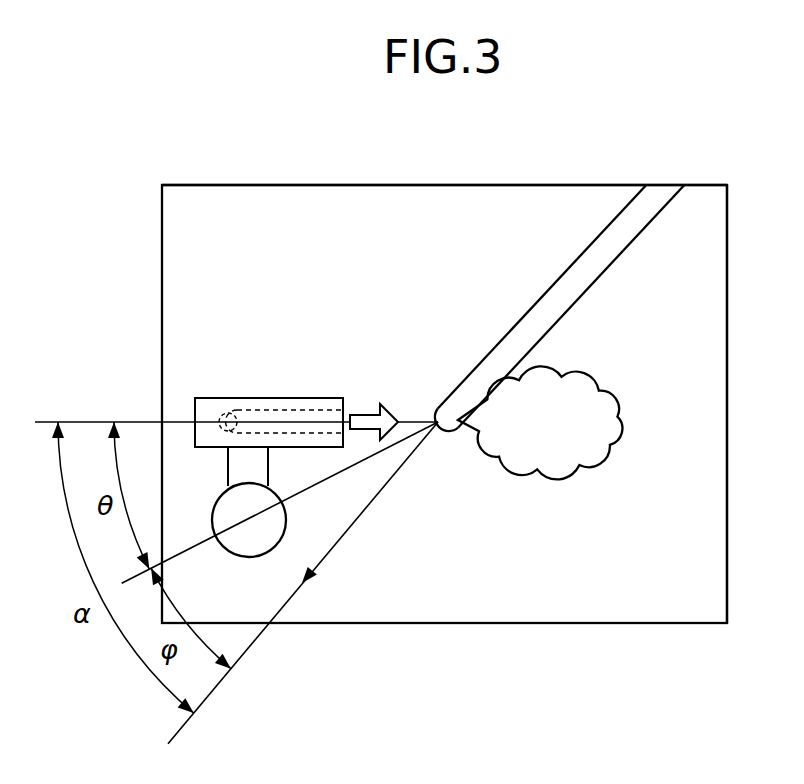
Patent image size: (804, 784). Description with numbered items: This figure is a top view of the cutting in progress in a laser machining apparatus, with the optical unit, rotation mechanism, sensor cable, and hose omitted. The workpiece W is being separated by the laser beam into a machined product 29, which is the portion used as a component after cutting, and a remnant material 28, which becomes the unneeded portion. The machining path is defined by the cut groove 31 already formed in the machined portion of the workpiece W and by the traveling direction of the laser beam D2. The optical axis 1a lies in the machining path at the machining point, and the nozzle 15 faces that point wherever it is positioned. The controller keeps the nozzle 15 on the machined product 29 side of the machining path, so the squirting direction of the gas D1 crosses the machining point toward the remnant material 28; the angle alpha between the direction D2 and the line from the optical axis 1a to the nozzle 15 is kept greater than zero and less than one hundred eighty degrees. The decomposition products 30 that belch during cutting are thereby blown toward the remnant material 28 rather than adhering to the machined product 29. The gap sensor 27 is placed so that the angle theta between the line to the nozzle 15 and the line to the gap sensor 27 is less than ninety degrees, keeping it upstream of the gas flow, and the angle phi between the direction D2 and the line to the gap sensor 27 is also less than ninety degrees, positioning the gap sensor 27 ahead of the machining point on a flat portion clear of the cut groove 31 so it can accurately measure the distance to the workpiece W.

The workpiece W is at (412, 185).
The machined product 29 is at (548, 191).
The remnant material 28 is at (710, 337).
The cut groove 31 is at (664, 191).
The optical axis 1a is at (440, 423).
The nozzle 15 is at (304, 408).
The gap sensor 27 is at (287, 523).
The squirting direction of the gas D1 is at (371, 399).
The traveling direction of the laser beam D2 is at (328, 554).
The decomposition products 30 is at (535, 470).